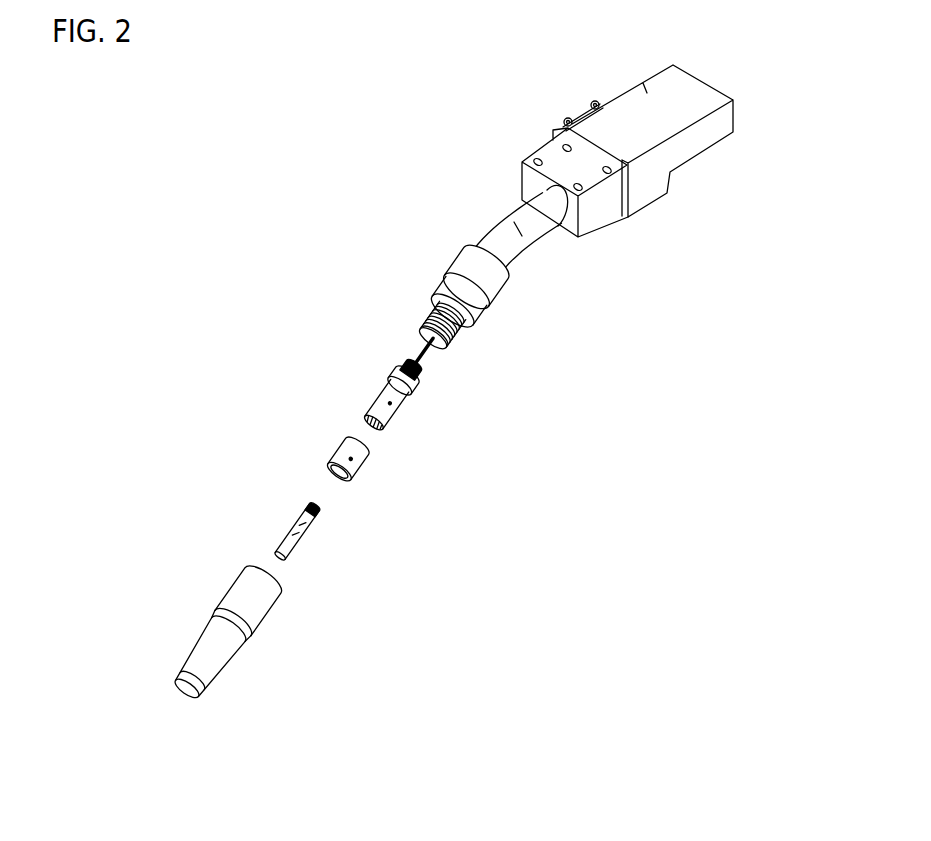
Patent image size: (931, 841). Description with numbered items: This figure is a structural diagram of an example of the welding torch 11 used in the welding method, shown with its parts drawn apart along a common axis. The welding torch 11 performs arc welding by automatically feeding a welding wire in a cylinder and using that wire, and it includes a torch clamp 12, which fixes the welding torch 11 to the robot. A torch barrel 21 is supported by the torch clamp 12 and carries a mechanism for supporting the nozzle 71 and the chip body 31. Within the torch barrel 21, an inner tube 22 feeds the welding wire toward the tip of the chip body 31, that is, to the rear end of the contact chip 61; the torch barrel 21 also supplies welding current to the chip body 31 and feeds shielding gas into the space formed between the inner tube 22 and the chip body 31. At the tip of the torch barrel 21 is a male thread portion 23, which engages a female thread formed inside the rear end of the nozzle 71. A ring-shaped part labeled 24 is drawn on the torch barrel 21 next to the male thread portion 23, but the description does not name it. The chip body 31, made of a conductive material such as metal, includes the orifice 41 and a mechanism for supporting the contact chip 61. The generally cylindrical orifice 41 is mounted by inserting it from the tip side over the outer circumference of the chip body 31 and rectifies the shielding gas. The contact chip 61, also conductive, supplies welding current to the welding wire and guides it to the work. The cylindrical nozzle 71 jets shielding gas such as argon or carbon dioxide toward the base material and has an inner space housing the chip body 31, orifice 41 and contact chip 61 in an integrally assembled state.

The welding torch 11 is at (279, 264).
The torch clamp 12 is at (546, 156).
The torch barrel 21 is at (533, 267).
The inner tube 22 is at (417, 343).
The male thread portion 23 is at (452, 337).
The fastening nut 24 is at (442, 281).
The chip body 31 is at (400, 414).
The orifice 41 is at (361, 479).
The contact chip 61 is at (308, 552).
The nozzle 71 is at (268, 654).